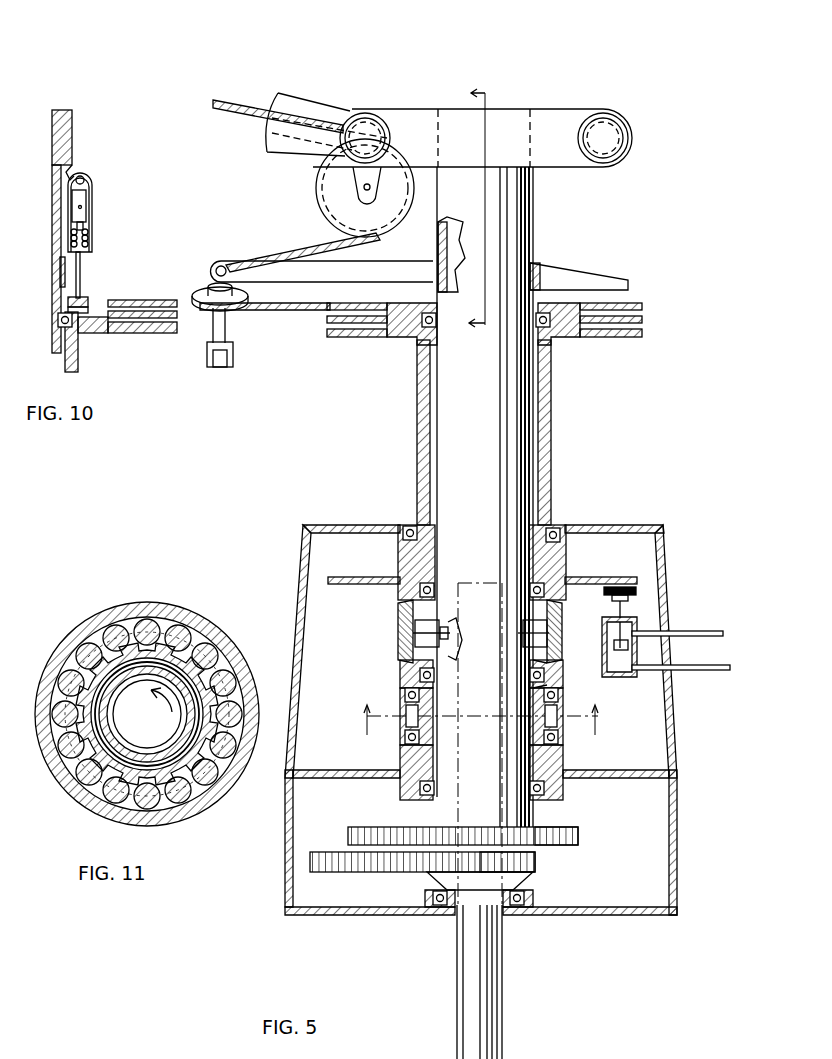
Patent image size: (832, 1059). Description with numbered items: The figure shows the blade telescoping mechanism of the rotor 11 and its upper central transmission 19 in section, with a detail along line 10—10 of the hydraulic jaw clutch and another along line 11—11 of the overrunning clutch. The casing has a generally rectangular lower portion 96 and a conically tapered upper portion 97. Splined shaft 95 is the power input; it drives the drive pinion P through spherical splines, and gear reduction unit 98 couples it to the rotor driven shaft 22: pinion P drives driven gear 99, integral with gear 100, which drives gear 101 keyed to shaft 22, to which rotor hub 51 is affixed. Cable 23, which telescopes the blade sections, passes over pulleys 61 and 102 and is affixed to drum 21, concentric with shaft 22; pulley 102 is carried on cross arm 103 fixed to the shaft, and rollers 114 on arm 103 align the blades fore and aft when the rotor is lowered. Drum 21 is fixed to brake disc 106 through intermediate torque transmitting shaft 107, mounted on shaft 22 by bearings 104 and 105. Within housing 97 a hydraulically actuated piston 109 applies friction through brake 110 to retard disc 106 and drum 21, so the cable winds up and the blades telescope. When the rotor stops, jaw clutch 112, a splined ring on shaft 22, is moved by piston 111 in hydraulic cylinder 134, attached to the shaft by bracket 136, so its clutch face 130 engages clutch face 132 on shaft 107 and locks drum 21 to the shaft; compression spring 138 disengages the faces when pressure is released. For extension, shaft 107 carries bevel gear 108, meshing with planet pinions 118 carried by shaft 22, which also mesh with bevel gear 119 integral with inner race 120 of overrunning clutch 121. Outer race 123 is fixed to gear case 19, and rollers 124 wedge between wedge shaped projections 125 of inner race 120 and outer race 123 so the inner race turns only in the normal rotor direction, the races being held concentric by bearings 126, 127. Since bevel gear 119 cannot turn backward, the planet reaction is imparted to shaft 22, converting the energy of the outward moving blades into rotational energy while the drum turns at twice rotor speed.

In FIG. 5, the section line 10— 10 is at (495, 199).
In FIG. 5, the rotor 11 is at (425, 102).
In FIG. 5, the upper central transmission 19 is at (293, 582).
In FIG. 5, the cable drum 21 is at (337, 338).
In FIG. 10, the cable drum 21 is at (150, 333).
In FIG. 5, the rotor driven shaft 22 is at (534, 220).
In FIG. 11, the rotor driven shaft 22 is at (106, 732).
In FIG. 5, the cable 23 is at (278, 318).
In FIG. 5, the rotor hub 51 is at (576, 108).
In FIG. 5, the pulley 61 is at (318, 193).
In FIG. 5, the splined shaft 95 is at (503, 1005).
In FIG. 5, the lower portion of casing 96 is at (678, 851).
In FIG. 5, the upper portion of casing 97 is at (677, 735).
In FIG. 5, the gear reduction unit 98 is at (311, 891).
In FIG. 5, the driven gear 99 is at (330, 852).
In FIG. 5, the gear 100 is at (355, 826).
In FIG. 5, the gear 101 is at (577, 834).
In FIG. 5, the pulley 102 is at (206, 297).
In FIG. 5, the cross arm 103 is at (360, 274).
In FIG. 5, the bearing 104 is at (548, 326).
In FIG. 5, the bearing 105 is at (420, 582).
In FIG. 5, the brake disc 106 is at (605, 578).
In FIG. 5, the intermediate torque transmitting shaft 107 is at (551, 447).
In FIG. 5, the bevel gear 108 is at (405, 608).
In FIG. 5, the hydraulically actuated piston 109 is at (635, 626).
In FIG. 5, the brake 110 is at (630, 588).
In FIG. 10, the piston 111 is at (84, 216).
In FIG. 10, the jaw clutch 112 is at (82, 300).
In FIG. 5, the rollers 114 is at (217, 369).
In FIG. 5, the planet pinions 118 is at (413, 633).
In FIG. 5, the bevel gear 119 is at (410, 668).
In FIG. 5, the inner race 120 is at (558, 750).
In FIG. 11, the inner race 120 is at (222, 692).
In FIG. 5, the overrunning clutch 121 is at (576, 704).
In FIG. 5, the outer race 123 is at (400, 703).
In FIG. 11, the outer race 123 is at (58, 642).
In FIG. 11, the rollers 124 is at (150, 622).
In FIG. 11, the wedge shaped projections 125 is at (218, 662).
In FIG. 5, the bearing 126 is at (552, 688).
In FIG. 5, the bearing 127 is at (408, 736).
In FIG. 10, the clutch face 130 is at (86, 310).
In FIG. 10, the clutch face 132 is at (76, 322).
In FIG. 10, the hydraulic cylinder 134 is at (90, 184).
In FIG. 10, the bracket 136 is at (72, 170).
In FIG. 10, the compression spring 138 is at (90, 242).
In FIG. 5, the drive pinion P is at (537, 863).